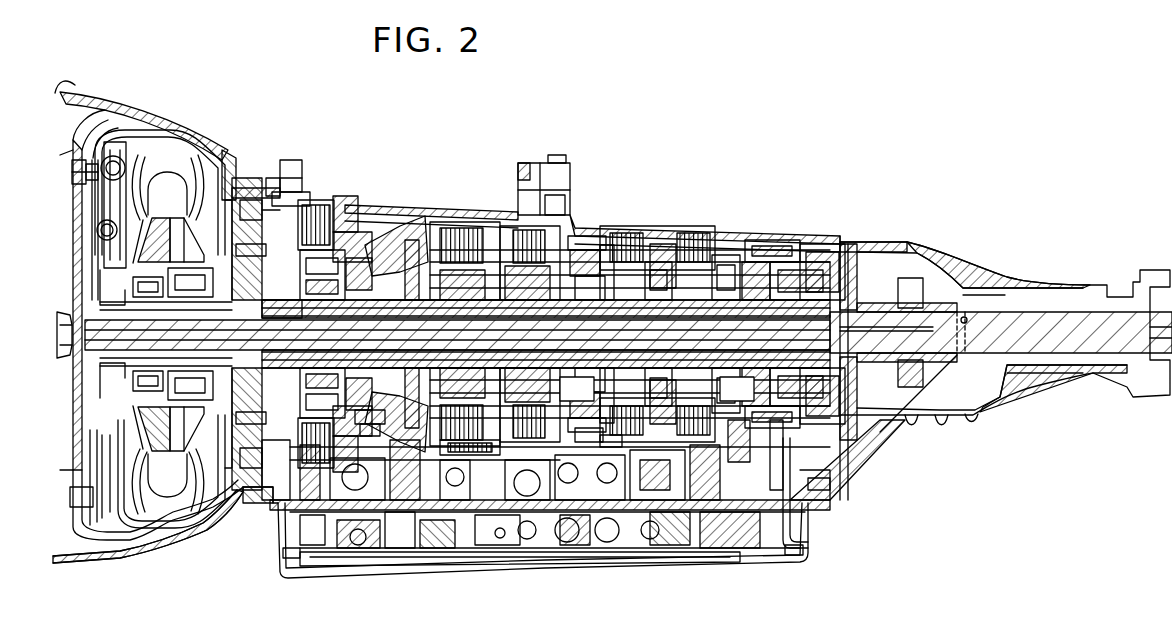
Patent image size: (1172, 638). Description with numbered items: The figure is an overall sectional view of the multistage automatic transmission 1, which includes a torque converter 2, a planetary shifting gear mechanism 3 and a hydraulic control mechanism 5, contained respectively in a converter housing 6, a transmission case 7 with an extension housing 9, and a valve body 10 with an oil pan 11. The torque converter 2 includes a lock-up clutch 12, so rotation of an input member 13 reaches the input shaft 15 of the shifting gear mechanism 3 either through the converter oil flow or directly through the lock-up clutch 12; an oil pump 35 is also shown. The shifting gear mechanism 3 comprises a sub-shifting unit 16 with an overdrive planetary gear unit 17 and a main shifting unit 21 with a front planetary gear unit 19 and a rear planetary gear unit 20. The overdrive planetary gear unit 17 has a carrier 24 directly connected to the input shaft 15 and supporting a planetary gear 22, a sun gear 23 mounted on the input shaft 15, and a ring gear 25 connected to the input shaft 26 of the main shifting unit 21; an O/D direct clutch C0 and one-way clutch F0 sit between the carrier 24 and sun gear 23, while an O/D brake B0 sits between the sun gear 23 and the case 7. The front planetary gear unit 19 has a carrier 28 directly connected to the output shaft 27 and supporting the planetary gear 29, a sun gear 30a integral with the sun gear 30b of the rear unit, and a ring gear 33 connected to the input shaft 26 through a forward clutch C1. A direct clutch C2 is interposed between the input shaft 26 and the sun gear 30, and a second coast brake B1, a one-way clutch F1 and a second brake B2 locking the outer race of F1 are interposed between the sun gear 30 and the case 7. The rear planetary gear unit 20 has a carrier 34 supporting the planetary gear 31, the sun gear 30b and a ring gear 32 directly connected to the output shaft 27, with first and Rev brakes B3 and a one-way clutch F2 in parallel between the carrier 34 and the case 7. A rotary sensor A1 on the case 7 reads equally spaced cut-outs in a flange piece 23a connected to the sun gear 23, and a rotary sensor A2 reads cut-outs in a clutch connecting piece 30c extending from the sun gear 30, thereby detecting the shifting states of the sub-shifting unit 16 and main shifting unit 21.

The multistage automatic transmission 1 is at (603, 68).
The torque converter 2 is at (200, 125).
The planetary shifting gear mechanism 3 is at (636, 136).
The hydraulic control mechanism 5 is at (565, 570).
The converter housing 6 is at (244, 176).
The transmission case 7 is at (433, 212).
The extension housing 9 is at (990, 268).
The valve body 10 is at (652, 548).
The oil pan 11 is at (609, 566).
The lock-up clutch 12 is at (92, 160).
The input member 13 is at (64, 318).
The input shaft 15 is at (216, 322).
The sub-shifting unit 16 is at (353, 232).
The overdrive planetary gear unit 17 is at (365, 258).
The front planetary gear unit 19 is at (592, 275).
The rear planetary gear unit 20 is at (772, 262).
The main shifting unit 21 is at (677, 222).
The planetary gear 22 is at (358, 256).
The sun gear 23 is at (378, 258).
The flange piece 23a is at (288, 175).
The carrier 24 is at (365, 424).
The ring gear 25 is at (394, 245).
The input shaft 26 is at (430, 265).
The output shaft 27 is at (1035, 314).
The carrier 28 is at (586, 430).
The planetary gear 29 is at (605, 248).
The sun gear 30 is at (678, 252).
The sun gear 30a is at (577, 389).
The sun gear 30b is at (737, 389).
The clutch connecting piece 30c is at (580, 248).
The planetary gear 31 is at (760, 242).
The ring gear 32 is at (752, 262).
The ring gear 33 is at (585, 236).
The carrier 34 is at (762, 432).
The oil pump 35 is at (228, 165).
The rotary sensor A1 is at (291, 160).
The rotary sensor A2 is at (566, 172).
The O/D brake B0 is at (350, 188).
The second coast brake B1 is at (470, 466).
The second brake B2 is at (627, 233).
The first and Rev brake B3 is at (700, 233).
The O/D direct clutch C0 is at (318, 204).
The forward clutch C1 is at (527, 250).
The direct clutch C2 is at (460, 232).
The one-way clutch F0 is at (282, 326).
The one-way clutch F1 is at (655, 262).
The one-way clutch F2 is at (726, 255).